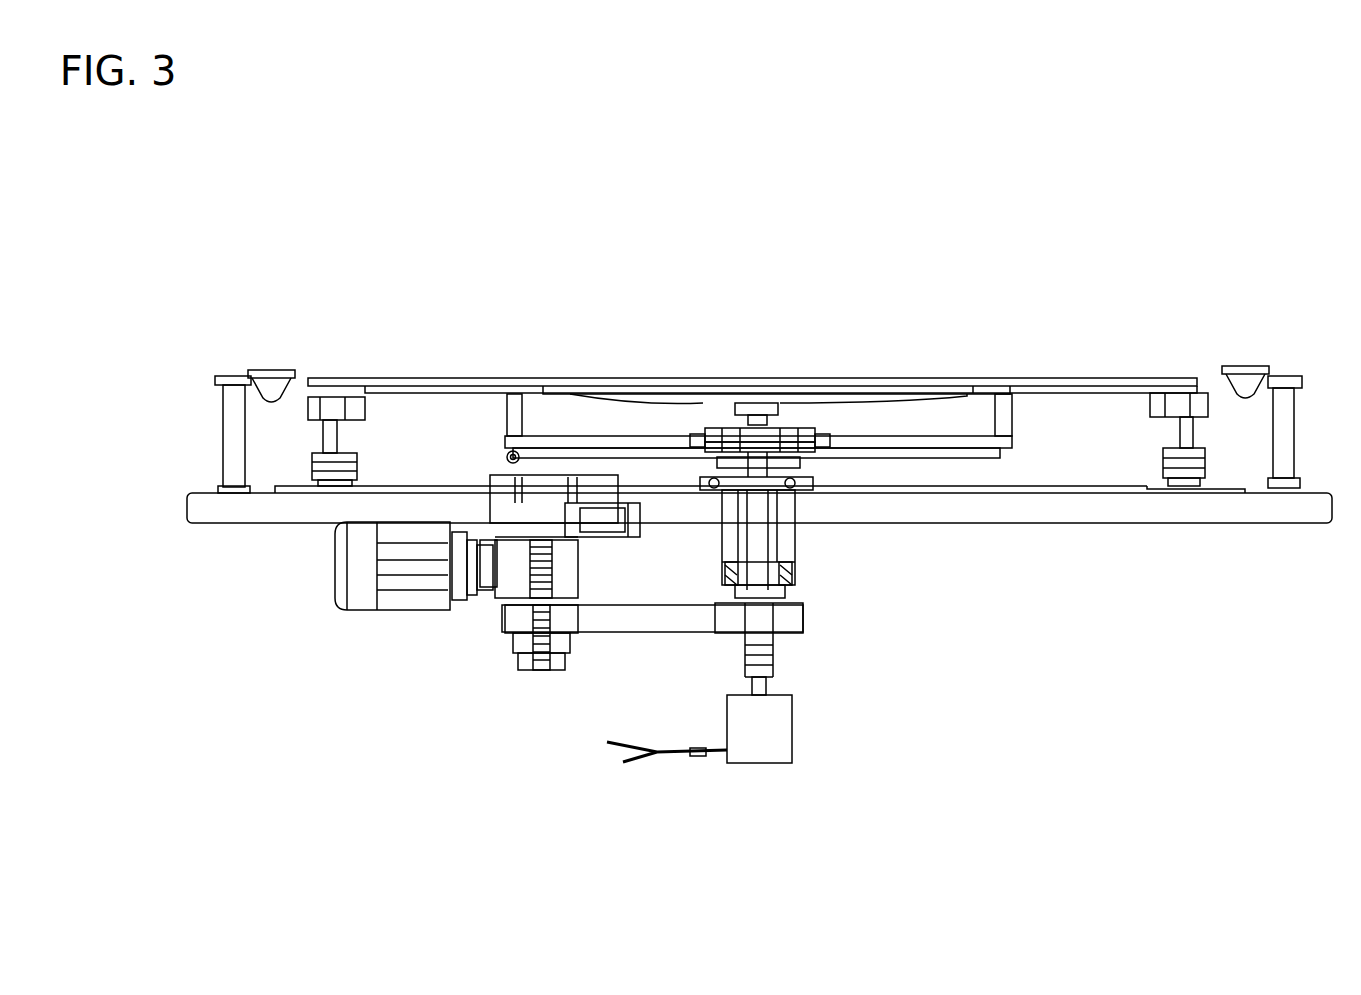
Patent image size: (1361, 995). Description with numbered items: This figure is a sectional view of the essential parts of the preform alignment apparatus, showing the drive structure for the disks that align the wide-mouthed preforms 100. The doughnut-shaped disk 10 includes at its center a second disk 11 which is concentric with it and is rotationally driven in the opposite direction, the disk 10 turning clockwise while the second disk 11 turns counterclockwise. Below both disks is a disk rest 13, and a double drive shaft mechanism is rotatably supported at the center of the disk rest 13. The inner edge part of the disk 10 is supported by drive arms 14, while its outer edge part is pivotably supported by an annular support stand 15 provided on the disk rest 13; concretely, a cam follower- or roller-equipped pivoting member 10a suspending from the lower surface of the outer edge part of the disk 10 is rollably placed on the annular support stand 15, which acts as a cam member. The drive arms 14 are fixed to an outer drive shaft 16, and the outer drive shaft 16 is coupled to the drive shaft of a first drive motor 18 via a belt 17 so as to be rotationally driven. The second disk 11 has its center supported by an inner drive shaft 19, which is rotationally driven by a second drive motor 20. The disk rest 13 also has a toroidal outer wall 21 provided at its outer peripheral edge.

The disk 10 is at (1093, 385).
The pivoting member 10a is at (1173, 474).
The second disk 11 is at (888, 386).
The disk rest 13 is at (288, 526).
The drive arms 14 is at (1010, 412).
The annular support stand 15 is at (1188, 460).
The outer drive shaft 16 is at (778, 530).
The belt 17 is at (634, 627).
The first drive motor 18 is at (420, 612).
The inner drive shaft 19 is at (793, 562).
The second drive motor 20 is at (796, 711).
The toroidal outer wall 21 is at (232, 442).
The preforms 100 is at (1241, 372).